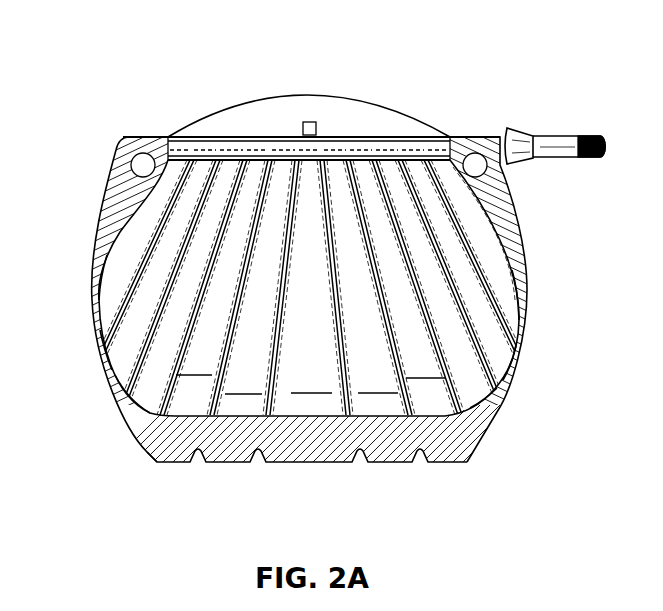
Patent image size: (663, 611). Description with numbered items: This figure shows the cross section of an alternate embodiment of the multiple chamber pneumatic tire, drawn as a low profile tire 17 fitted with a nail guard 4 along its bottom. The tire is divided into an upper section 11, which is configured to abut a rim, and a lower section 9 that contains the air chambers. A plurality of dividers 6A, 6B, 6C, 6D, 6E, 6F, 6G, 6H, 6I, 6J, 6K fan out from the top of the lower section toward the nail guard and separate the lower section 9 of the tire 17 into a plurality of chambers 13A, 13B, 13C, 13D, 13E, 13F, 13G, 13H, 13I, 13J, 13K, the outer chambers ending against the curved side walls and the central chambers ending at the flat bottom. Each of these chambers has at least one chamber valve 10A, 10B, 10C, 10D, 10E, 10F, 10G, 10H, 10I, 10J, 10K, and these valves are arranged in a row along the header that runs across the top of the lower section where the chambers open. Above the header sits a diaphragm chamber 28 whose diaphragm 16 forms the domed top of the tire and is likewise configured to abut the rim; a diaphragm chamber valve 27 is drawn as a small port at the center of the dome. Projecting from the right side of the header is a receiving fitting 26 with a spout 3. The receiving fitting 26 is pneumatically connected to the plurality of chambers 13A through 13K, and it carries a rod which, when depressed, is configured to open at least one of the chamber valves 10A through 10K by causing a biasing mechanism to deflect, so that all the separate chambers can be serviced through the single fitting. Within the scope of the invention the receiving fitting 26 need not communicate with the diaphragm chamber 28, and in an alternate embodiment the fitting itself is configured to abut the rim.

The lower section 9 is at (528, 283).
The low profile tire 17 is at (102, 240).
The nail guard 4 is at (150, 437).
The upper section 11 is at (366, 108).
The diaphragm 16 is at (428, 112).
The diaphragm chamber 28 is at (433, 130).
The diaphragm chamber valve 27 is at (313, 122).
The receiving fitting 26 is at (510, 117).
The spout tube 3 is at (523, 147).
The divider 6A is at (155, 258).
The divider 6B is at (172, 312).
The divider 6C is at (195, 342).
The divider 6D is at (247, 312).
The divider 6E is at (287, 302).
The divider 6F is at (333, 292).
The divider 6G is at (343, 305).
The divider 6H is at (378, 266).
The divider 6I is at (411, 266).
The divider 6J is at (433, 238).
The divider 6K is at (458, 228).
The chamber valve 10A is at (182, 157).
The chamber valve 10B is at (207, 157).
The chamber valve 10C is at (232, 157).
The chamber valve 10D is at (257, 157).
The chamber valve 10E is at (282, 157).
The chamber valve 10F is at (308, 157).
The chamber valve 10G is at (335, 157).
The chamber valve 10H is at (360, 157).
The chamber valve 10I is at (385, 157).
The chamber valve 10J is at (410, 157).
The chamber valve 10K is at (438, 157).
The chamber 13A is at (108, 290).
The chamber 13B is at (112, 353).
The chamber 13C is at (140, 385).
The chamber 13D is at (194, 367).
The chamber 13E is at (243, 386).
The chamber 13F is at (311, 385).
The chamber 13G is at (378, 385).
The chamber 13H is at (426, 368).
The chamber 13I is at (490, 390).
The chamber 13J is at (504, 348).
The chamber 13K is at (513, 290).